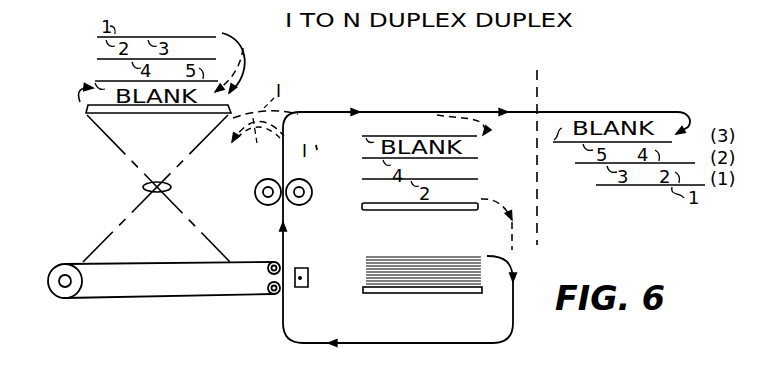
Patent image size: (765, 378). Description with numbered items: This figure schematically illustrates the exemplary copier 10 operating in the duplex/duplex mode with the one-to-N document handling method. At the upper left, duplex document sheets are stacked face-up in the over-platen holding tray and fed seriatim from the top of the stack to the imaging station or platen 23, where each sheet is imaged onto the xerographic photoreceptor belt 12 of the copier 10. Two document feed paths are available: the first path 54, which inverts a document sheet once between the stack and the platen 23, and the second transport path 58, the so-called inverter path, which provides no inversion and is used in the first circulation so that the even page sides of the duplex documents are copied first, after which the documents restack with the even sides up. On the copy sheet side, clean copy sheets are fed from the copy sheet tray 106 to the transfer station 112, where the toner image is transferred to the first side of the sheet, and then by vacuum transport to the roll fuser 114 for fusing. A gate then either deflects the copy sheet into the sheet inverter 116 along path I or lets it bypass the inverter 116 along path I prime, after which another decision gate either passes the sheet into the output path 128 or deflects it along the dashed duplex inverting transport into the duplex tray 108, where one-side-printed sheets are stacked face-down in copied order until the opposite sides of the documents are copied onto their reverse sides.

The copier 10 is at (369, 100).
The photoreceptor belt 12 is at (204, 296).
The imaging station (platen) 23 is at (100, 130).
The first path 54 is at (245, 63).
The second transport path (inverter path) 58 is at (244, 56).
The copy sheet tray 106 is at (425, 294).
The duplex tray 108 is at (382, 212).
The transfer station 112 is at (308, 272).
The roll fuser 114 is at (312, 198).
The sheet inverter 116 is at (258, 145).
The output path 128 is at (462, 111).